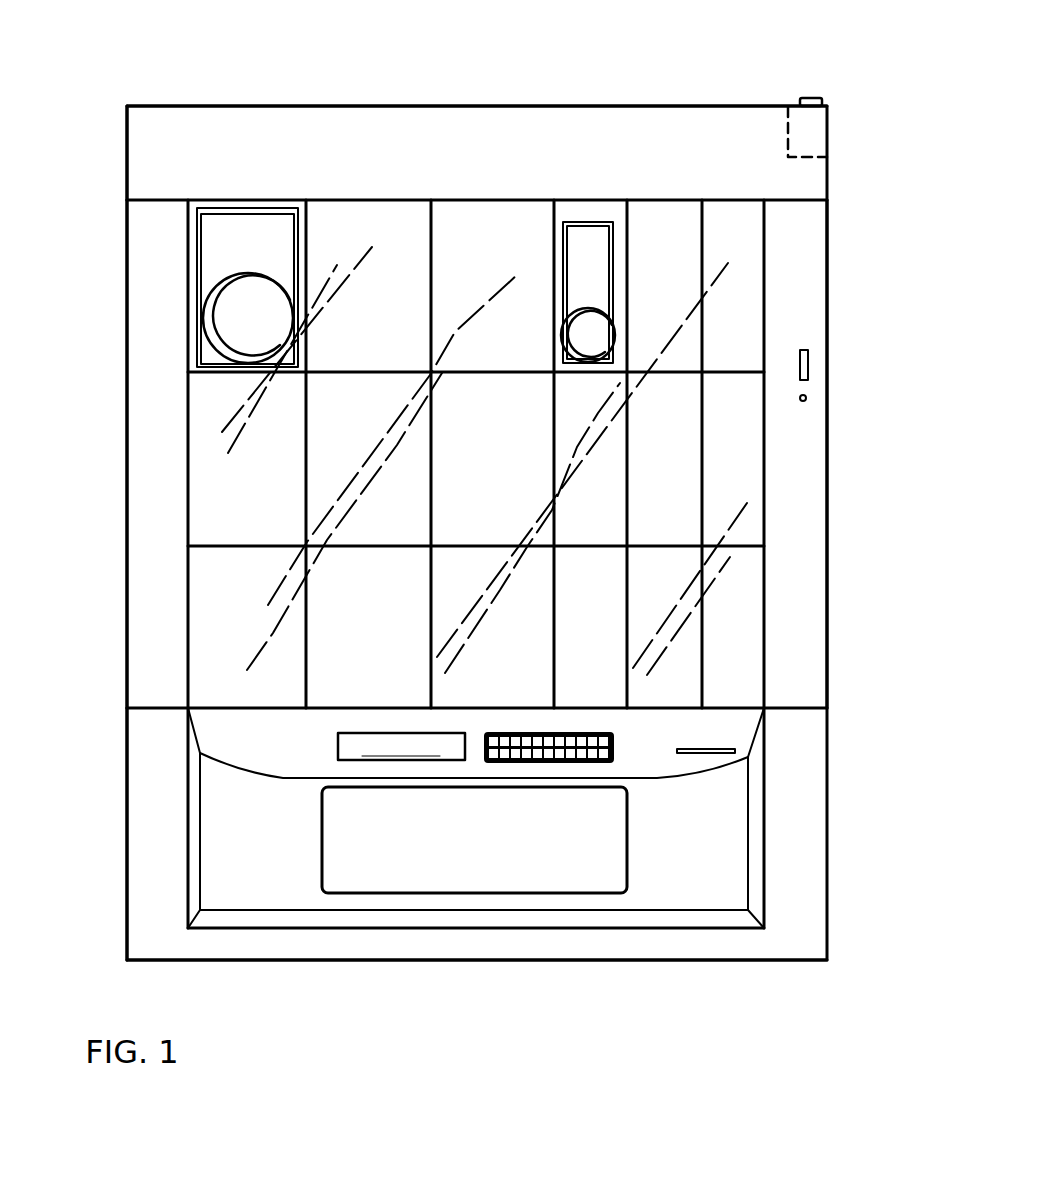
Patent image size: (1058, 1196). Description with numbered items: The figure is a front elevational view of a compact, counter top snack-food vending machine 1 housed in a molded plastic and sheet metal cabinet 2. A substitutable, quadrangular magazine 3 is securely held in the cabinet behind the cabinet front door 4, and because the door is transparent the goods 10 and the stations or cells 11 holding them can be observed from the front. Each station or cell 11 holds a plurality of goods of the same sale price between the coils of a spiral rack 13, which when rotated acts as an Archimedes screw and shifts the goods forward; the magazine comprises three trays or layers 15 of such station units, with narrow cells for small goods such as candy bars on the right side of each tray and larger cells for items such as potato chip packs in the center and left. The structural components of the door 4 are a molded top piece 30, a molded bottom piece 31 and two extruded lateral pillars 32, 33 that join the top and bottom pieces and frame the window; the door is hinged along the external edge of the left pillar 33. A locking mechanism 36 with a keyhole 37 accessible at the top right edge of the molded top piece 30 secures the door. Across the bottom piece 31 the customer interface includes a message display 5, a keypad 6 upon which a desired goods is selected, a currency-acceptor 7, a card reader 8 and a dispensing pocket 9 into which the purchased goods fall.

The vending machine 1 is at (703, 55).
The cabinet 2 is at (393, 113).
The magazine 3 is at (740, 481).
The cabinet front door 4 is at (817, 613).
The message display 5 is at (338, 745).
The keypad 6 is at (613, 745).
The currency-acceptor 7 is at (808, 362).
The card reader 8 is at (683, 752).
The dispensing pocket 9 is at (627, 855).
The goods 10 is at (287, 243).
The station or cell 11 is at (582, 208).
The spiral rack 13 is at (212, 296).
The trays or layers 15 is at (187, 340).
The molded top piece 30 is at (145, 157).
The molded bottom piece 31 is at (130, 858).
The lateral pillar 32 is at (828, 273).
The lateral pillar 33 is at (135, 308).
The locking mechanism 36 is at (817, 145).
The keyhole 37 is at (813, 92).